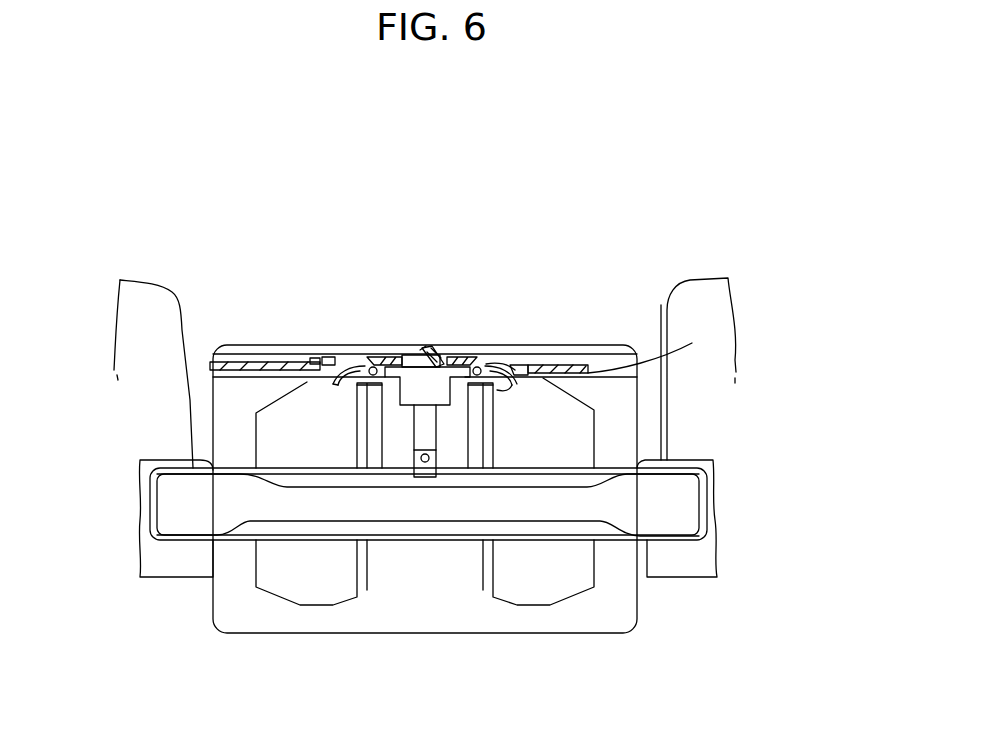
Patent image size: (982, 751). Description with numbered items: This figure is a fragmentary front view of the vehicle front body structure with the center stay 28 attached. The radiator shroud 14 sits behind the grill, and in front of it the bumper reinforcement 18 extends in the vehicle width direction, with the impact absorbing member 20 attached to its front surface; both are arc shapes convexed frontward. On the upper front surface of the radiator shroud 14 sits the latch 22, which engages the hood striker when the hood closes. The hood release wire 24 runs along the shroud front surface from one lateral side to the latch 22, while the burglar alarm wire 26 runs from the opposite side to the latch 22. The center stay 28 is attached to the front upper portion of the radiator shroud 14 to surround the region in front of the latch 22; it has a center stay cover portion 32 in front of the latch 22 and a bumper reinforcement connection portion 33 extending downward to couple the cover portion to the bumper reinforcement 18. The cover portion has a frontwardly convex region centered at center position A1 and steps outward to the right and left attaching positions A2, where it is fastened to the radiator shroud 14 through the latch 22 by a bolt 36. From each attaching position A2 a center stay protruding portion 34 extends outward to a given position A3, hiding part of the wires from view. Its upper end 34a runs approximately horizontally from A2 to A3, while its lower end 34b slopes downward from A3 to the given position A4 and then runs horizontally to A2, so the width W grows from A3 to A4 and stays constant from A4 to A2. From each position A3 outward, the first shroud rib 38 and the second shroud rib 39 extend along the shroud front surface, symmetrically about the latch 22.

The radiator shroud 14 is at (623, 428).
The bumper reinforcement 18 is at (283, 478).
The impact absorbing member 20 is at (185, 515).
The latch 22 is at (428, 348).
The hood release wire 24 is at (682, 348).
The burglar alarm wire 26 is at (282, 360).
The center stay 28 is at (470, 360).
The center stay cover portion 32 is at (425, 348).
The bumper reinforcement connection portion 33 is at (427, 478).
The center stay protruding portion 34 is at (348, 370).
The upper end of the center stay protruding portion 34a is at (497, 357).
The lower end of the center stay protruding portion 34b is at (497, 386).
The bolt 36 is at (373, 376).
The first shroud rib 38 is at (578, 362).
The second shroud rib 39 is at (340, 383).
The center position A1 is at (422, 345).
The attaching position A2 is at (459, 340).
The given position A3 is at (510, 352).
The given position A4 is at (485, 350).
The width W is at (357, 368).